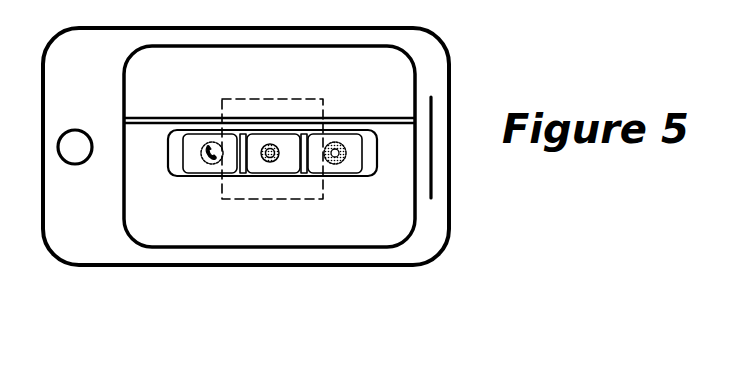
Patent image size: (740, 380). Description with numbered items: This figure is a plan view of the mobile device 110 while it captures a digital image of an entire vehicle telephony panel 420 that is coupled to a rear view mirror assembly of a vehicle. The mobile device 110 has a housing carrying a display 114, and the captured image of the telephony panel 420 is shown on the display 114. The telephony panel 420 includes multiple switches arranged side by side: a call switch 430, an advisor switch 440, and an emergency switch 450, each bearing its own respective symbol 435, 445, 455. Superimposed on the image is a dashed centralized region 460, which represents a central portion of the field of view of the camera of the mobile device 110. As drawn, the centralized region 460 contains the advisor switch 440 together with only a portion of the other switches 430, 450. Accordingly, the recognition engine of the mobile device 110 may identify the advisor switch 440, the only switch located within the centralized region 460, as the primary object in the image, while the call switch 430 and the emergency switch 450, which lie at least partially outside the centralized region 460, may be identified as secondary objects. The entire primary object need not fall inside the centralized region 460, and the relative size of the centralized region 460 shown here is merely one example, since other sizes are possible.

The mobile device 110 is at (484, 251).
The display 114 is at (411, 62).
The vehicle telephony panel 420 is at (377, 152).
The call switch 430 is at (193, 176).
The symbol 435 is at (200, 153).
The advisor switch 440 is at (283, 177).
The symbol 445 is at (262, 160).
The emergency switch 450 is at (362, 175).
The symbol 455 is at (335, 164).
The centralized region 460 is at (252, 98).